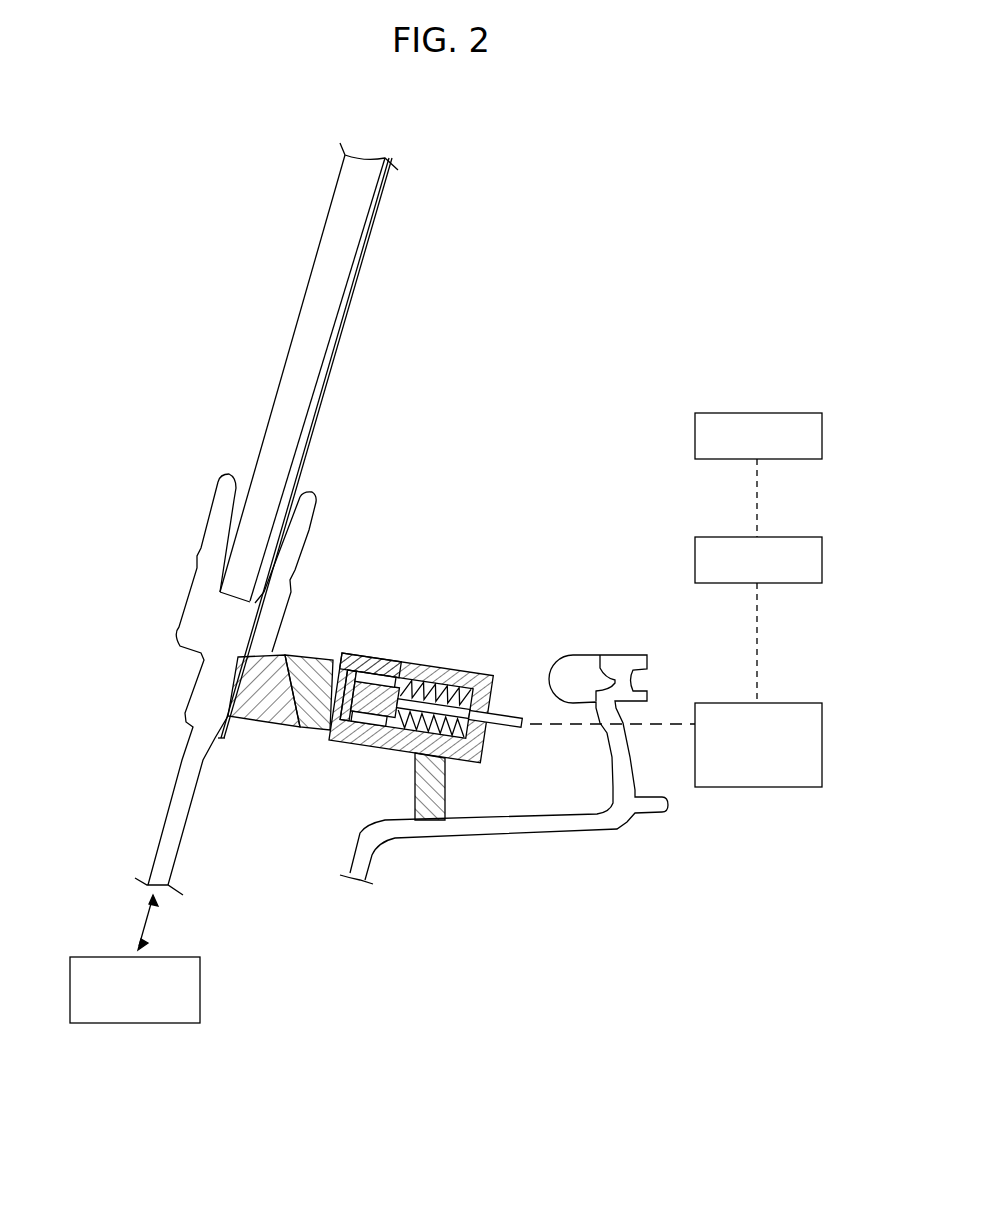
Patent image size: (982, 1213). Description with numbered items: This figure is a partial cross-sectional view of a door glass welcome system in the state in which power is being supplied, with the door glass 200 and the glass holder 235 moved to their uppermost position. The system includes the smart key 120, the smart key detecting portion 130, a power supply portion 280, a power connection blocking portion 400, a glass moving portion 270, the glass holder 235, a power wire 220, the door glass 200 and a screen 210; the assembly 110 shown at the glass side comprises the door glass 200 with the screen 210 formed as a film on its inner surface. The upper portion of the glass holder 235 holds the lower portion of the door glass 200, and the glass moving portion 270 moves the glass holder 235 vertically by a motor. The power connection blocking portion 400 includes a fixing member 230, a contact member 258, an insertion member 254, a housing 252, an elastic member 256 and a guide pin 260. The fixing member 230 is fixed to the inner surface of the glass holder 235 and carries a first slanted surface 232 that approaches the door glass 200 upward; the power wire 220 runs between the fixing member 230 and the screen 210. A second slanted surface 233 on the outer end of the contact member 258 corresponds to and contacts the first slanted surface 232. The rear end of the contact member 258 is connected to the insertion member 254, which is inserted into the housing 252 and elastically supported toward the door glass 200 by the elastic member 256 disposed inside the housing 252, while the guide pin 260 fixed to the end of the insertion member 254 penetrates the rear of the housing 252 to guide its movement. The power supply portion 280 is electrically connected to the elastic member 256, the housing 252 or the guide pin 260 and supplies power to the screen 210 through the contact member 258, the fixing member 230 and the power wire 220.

The window assembly 110 is at (230, 170).
The door glass 200 is at (322, 325).
The screen 210 is at (357, 282).
The power wire 220 is at (248, 633).
The fixing member 230 is at (282, 691).
The first slanted surface 232 is at (238, 718).
The second slanted surface 233 is at (262, 672).
The glass holder 235 is at (215, 605).
The housing 252 is at (410, 665).
The insertion member 254 is at (345, 651).
The elastic member 256 is at (425, 750).
The contact member 258 is at (335, 708).
The guide pin 260 is at (512, 706).
The glass moving portion 270 is at (200, 980).
The power supply portion 280 is at (752, 788).
The smart key 120 is at (695, 435).
The smart key detecting portion 130 is at (695, 558).
The power connection blocking portion 400 is at (608, 1067).